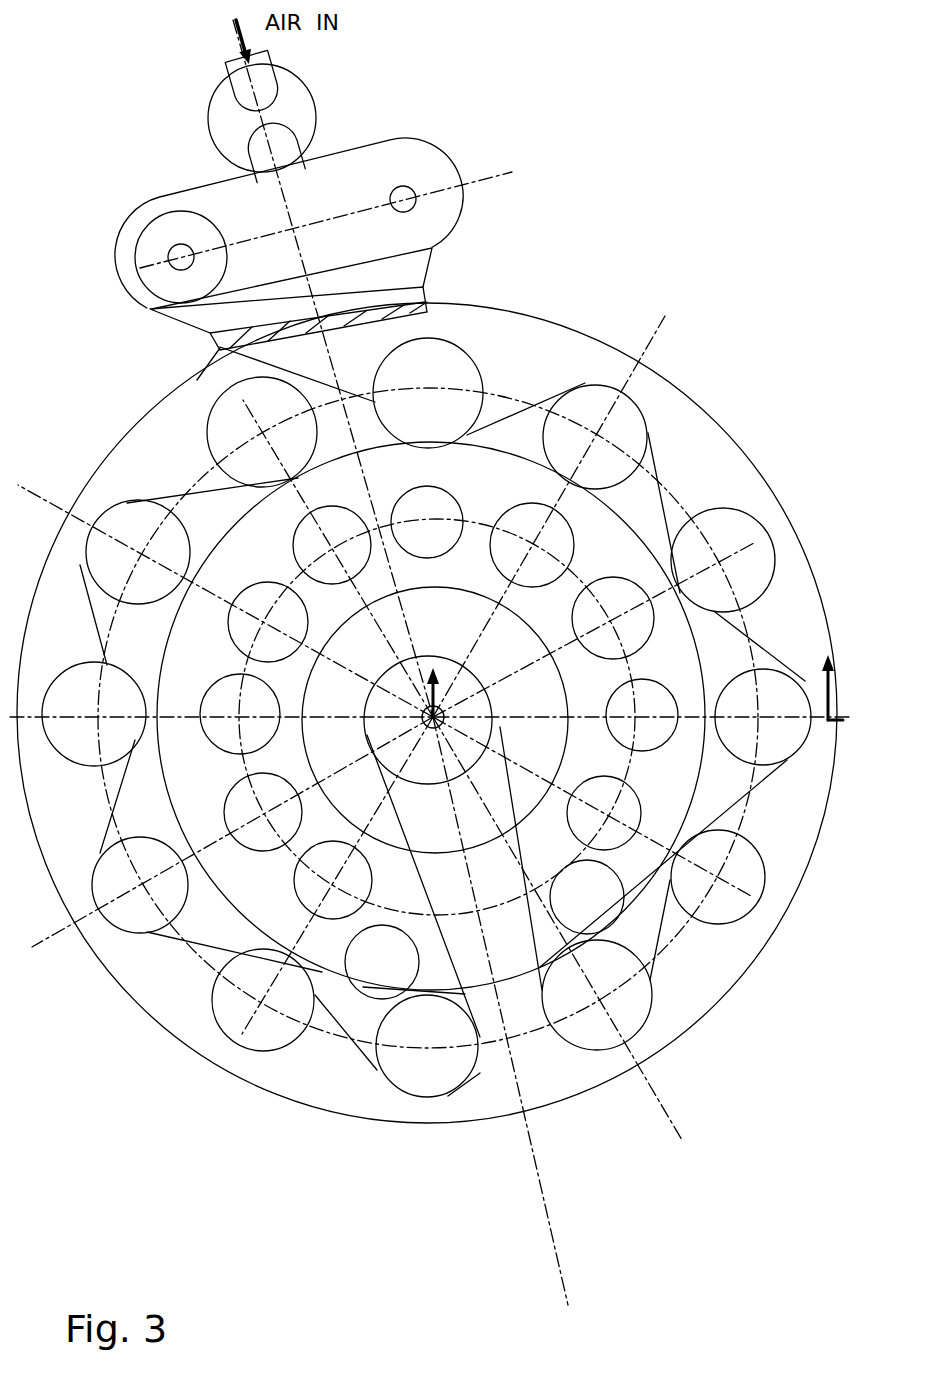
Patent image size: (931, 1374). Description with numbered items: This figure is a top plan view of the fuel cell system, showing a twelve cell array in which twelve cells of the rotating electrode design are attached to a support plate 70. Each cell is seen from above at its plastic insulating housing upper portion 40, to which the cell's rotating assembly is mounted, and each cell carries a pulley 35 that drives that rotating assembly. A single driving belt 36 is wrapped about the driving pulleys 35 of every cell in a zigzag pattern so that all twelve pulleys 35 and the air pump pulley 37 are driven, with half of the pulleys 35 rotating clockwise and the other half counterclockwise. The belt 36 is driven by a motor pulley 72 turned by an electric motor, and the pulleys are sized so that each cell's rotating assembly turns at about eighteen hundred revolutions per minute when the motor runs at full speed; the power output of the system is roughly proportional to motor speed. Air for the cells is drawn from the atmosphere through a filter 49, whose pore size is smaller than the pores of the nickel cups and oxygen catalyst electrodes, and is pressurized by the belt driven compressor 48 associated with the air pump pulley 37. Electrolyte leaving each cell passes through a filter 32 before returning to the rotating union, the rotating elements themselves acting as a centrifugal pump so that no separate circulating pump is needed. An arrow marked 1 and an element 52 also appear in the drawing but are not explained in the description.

The direction arrow 1 is at (635, 719).
The filter 32 is at (538, 558).
The pulley 35 is at (717, 510).
The belt 36 is at (190, 943).
The air pump pulley 37 is at (192, 217).
The housing upper portion 40 is at (572, 337).
The belt driven compressor 48 is at (447, 163).
The filter 49 is at (303, 78).
The friction pad 52 is at (423, 310).
The support plate 70 is at (532, 484).
The motor pulley 72 is at (413, 783).